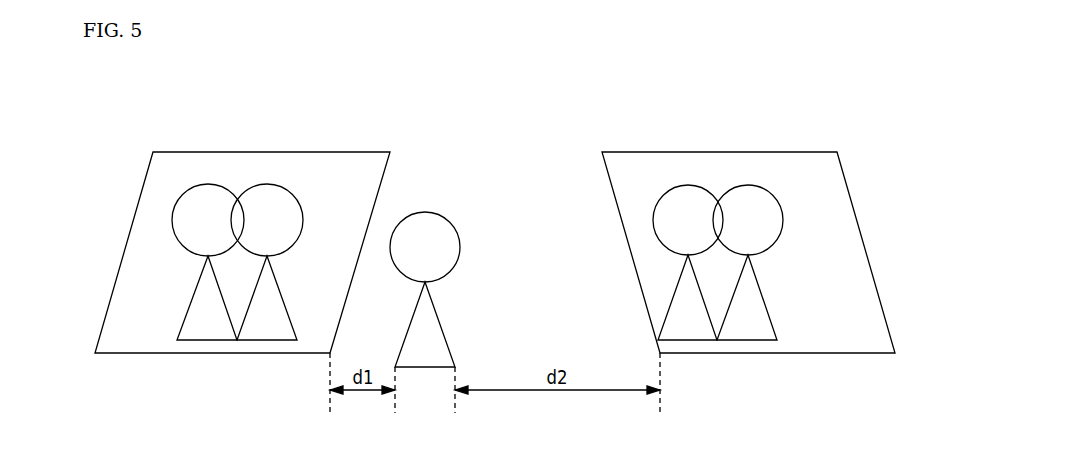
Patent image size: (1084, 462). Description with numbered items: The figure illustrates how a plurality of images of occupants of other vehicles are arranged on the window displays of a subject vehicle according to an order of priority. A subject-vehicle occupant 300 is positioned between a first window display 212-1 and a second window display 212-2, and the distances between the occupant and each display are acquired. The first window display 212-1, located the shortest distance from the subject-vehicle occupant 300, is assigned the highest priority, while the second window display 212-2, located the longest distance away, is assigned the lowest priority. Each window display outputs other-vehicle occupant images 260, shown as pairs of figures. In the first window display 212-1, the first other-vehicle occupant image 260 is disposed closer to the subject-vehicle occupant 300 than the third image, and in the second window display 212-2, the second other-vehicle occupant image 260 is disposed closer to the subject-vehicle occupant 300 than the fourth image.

The first window display 212-1 is at (357, 152).
The second window display 212-2 is at (803, 152).
The other-vehicle occupant image 260 is at (205, 183).
The subject-vehicle occupant 300 is at (425, 211).